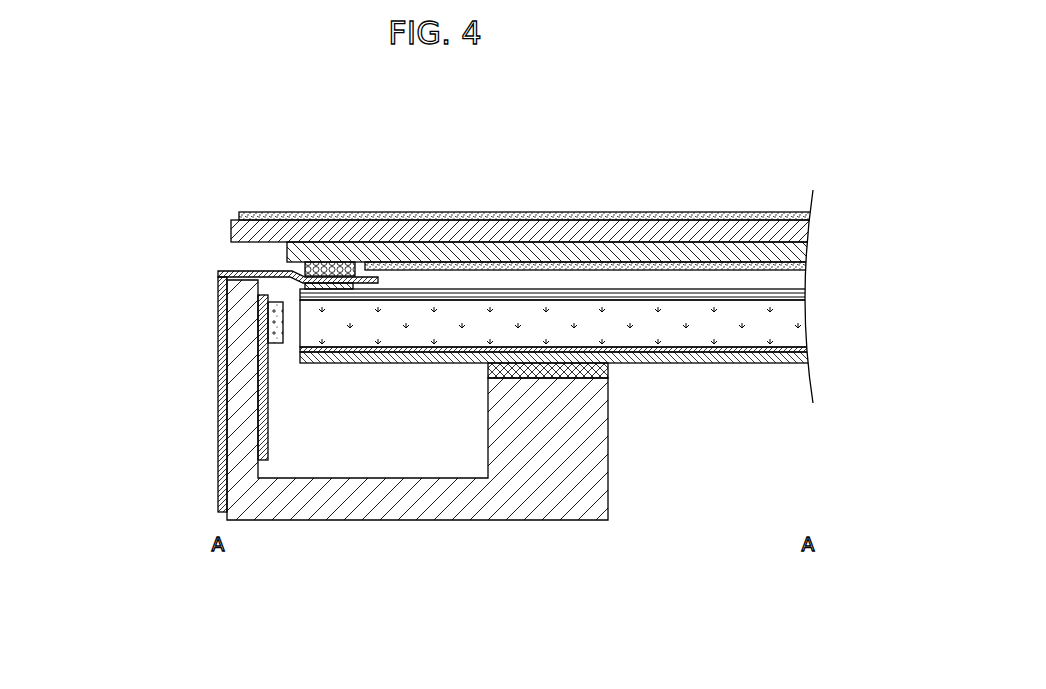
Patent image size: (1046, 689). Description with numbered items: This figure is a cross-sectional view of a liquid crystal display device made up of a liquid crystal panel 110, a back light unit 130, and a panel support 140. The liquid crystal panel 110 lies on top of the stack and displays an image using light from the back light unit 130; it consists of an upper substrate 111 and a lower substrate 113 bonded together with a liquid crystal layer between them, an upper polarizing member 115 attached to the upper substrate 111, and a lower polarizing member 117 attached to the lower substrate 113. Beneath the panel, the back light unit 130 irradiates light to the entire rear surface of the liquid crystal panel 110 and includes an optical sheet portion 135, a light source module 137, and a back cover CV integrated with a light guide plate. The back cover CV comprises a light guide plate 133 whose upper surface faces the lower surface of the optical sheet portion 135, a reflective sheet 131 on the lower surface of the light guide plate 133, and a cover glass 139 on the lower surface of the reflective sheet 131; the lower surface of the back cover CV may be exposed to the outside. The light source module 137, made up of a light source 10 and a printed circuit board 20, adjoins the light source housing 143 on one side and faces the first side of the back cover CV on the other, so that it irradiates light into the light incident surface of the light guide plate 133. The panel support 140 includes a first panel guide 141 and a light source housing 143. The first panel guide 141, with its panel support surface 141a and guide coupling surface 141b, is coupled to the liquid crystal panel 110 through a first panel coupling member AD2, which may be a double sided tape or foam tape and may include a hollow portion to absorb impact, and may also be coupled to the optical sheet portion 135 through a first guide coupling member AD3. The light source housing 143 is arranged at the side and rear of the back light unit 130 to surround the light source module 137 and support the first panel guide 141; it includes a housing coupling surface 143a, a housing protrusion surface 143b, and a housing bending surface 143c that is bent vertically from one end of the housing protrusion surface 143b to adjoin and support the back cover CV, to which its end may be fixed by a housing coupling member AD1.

The liquid crystal panel 110 is at (500, 157).
The upper substrate 111 is at (545, 228).
The lower substrate 113 is at (587, 250).
The upper polarizing member 115 is at (498, 216).
The lower polarizing member 117 is at (630, 267).
The housing coupling member AD1 is at (488, 373).
The first panel coupling member AD2 is at (314, 262).
The first guide coupling member AD3 is at (340, 283).
The back light unit 130 is at (280, 634).
The reflective sheet 131 is at (628, 352).
The light guide plate 133 is at (570, 323).
The optical sheet portion 135 is at (520, 297).
The cover glass 139 is at (673, 357).
The back cover integrated with a light guide plate CV is at (697, 598).
The light source module 137 is at (240, 598).
The light source 10 is at (276, 327).
The printed circuit board 20 is at (267, 462).
The panel support 140 is at (84, 280).
The first panel guide 141 is at (134, 256).
The panel support surface 141a is at (247, 271).
The guide coupling surface 141b is at (223, 300).
The light source housing 143 is at (347, 447).
The housing coupling surface 143a is at (224, 452).
The housing protrusion surface 143b is at (385, 522).
The housing bending surface 143c is at (488, 437).